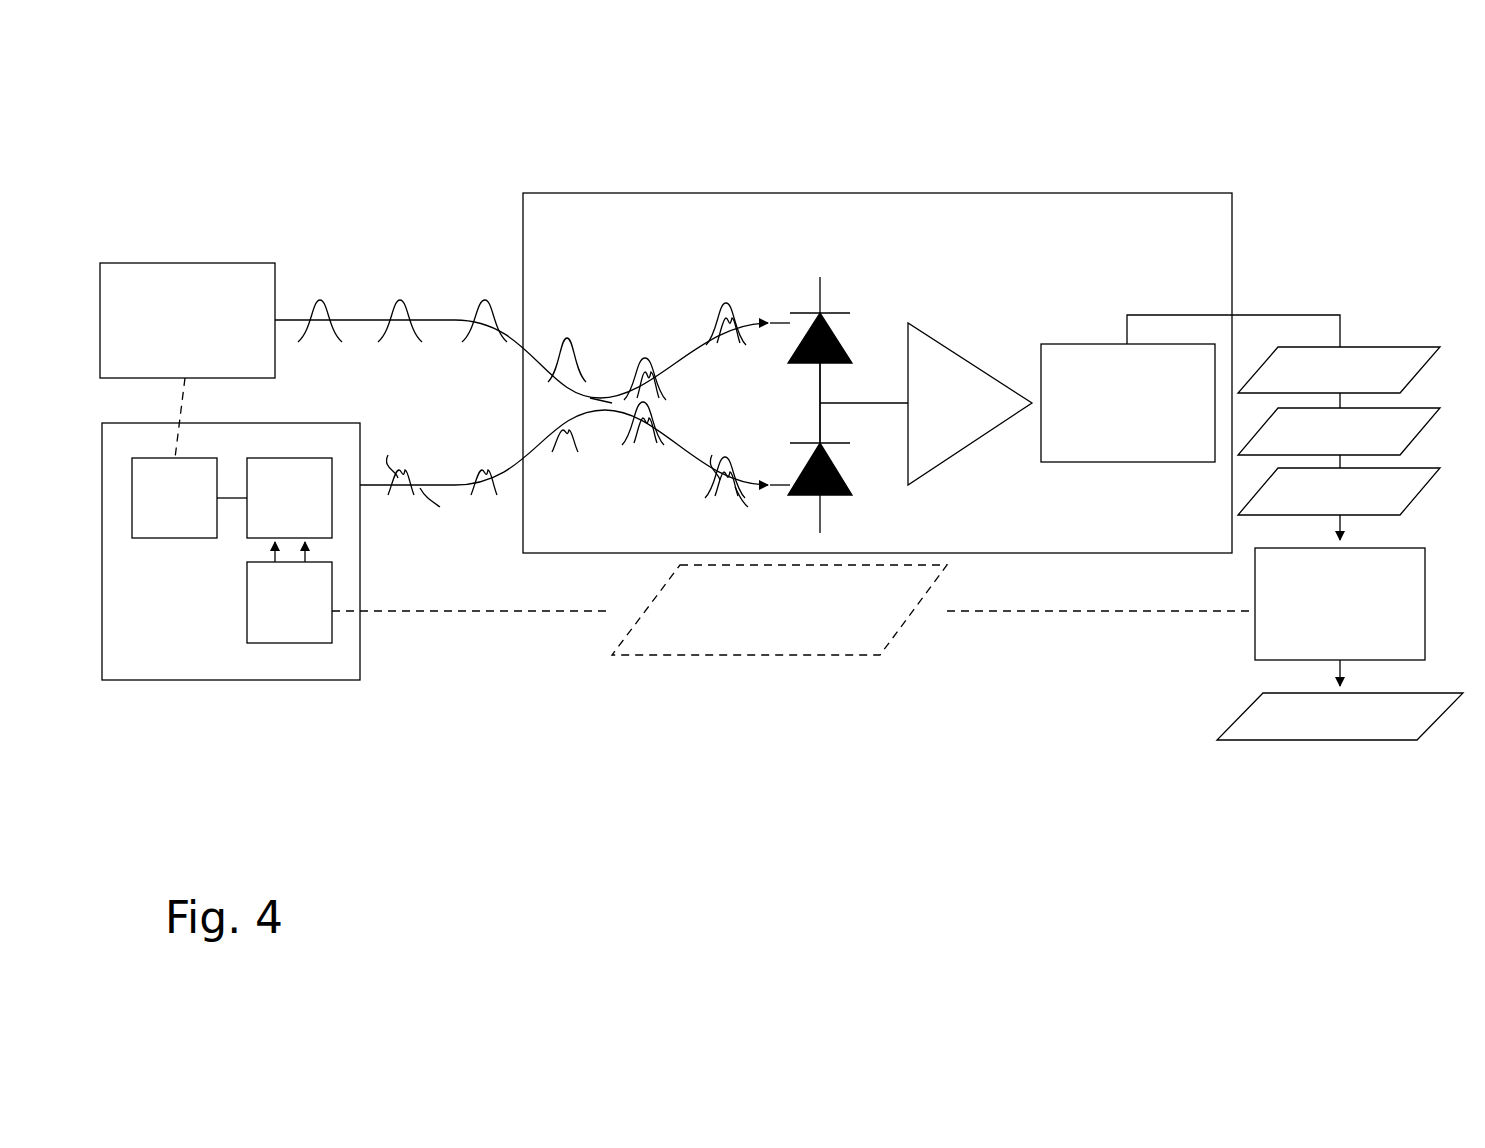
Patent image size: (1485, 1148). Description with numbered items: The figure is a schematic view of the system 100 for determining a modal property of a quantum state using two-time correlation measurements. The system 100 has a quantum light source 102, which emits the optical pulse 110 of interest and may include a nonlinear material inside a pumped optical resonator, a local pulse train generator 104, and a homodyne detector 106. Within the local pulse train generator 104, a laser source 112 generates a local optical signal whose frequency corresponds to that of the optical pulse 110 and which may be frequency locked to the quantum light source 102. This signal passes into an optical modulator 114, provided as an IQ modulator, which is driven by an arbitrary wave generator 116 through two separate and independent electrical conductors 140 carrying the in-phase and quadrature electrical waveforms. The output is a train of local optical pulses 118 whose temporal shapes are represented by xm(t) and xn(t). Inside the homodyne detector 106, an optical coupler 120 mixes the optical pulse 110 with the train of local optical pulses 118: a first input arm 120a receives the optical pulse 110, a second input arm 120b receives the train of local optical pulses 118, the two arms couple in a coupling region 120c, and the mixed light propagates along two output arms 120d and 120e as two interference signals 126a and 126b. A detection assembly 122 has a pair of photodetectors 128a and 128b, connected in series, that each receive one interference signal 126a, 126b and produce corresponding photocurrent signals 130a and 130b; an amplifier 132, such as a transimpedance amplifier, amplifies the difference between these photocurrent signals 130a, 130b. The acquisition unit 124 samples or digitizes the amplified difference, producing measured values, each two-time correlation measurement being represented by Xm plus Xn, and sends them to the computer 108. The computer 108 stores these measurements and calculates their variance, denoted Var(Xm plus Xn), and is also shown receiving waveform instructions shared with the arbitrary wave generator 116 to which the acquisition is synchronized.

The system 100 is at (1250, 146).
The quantum light source 102 is at (187, 320).
The local pulse train generator 104 is at (310, 683).
The homodyne detector 106 is at (686, 193).
The computer 108 is at (1340, 604).
The optical pulse 110 is at (403, 303).
The laser source 112 is at (174, 498).
The optical modulator 114 is at (289, 498).
The arbitrary wave generator 116 is at (289, 602).
The train of local optical pulses 118 is at (413, 432).
The optical coupler 120 is at (611, 360).
The first input arm 120a is at (516, 345).
The second input arm 120b is at (535, 462).
The coupling region 120c is at (600, 398).
The first output arm 120d is at (683, 353).
The second output arm 120e is at (684, 478).
The detection assembly 122 is at (817, 368).
The acquisition unit 124 is at (1062, 345).
The first interference signal 126a is at (773, 321).
The second interference signal 126b is at (777, 488).
The first photodetector 128a is at (840, 345).
The second photodetector 128b is at (856, 492).
The first photocurrent signal 130a is at (822, 393).
The second photocurrent signal 130b is at (822, 432).
The amplifier 132 is at (942, 348).
The electrical conductors 140 is at (275, 552).